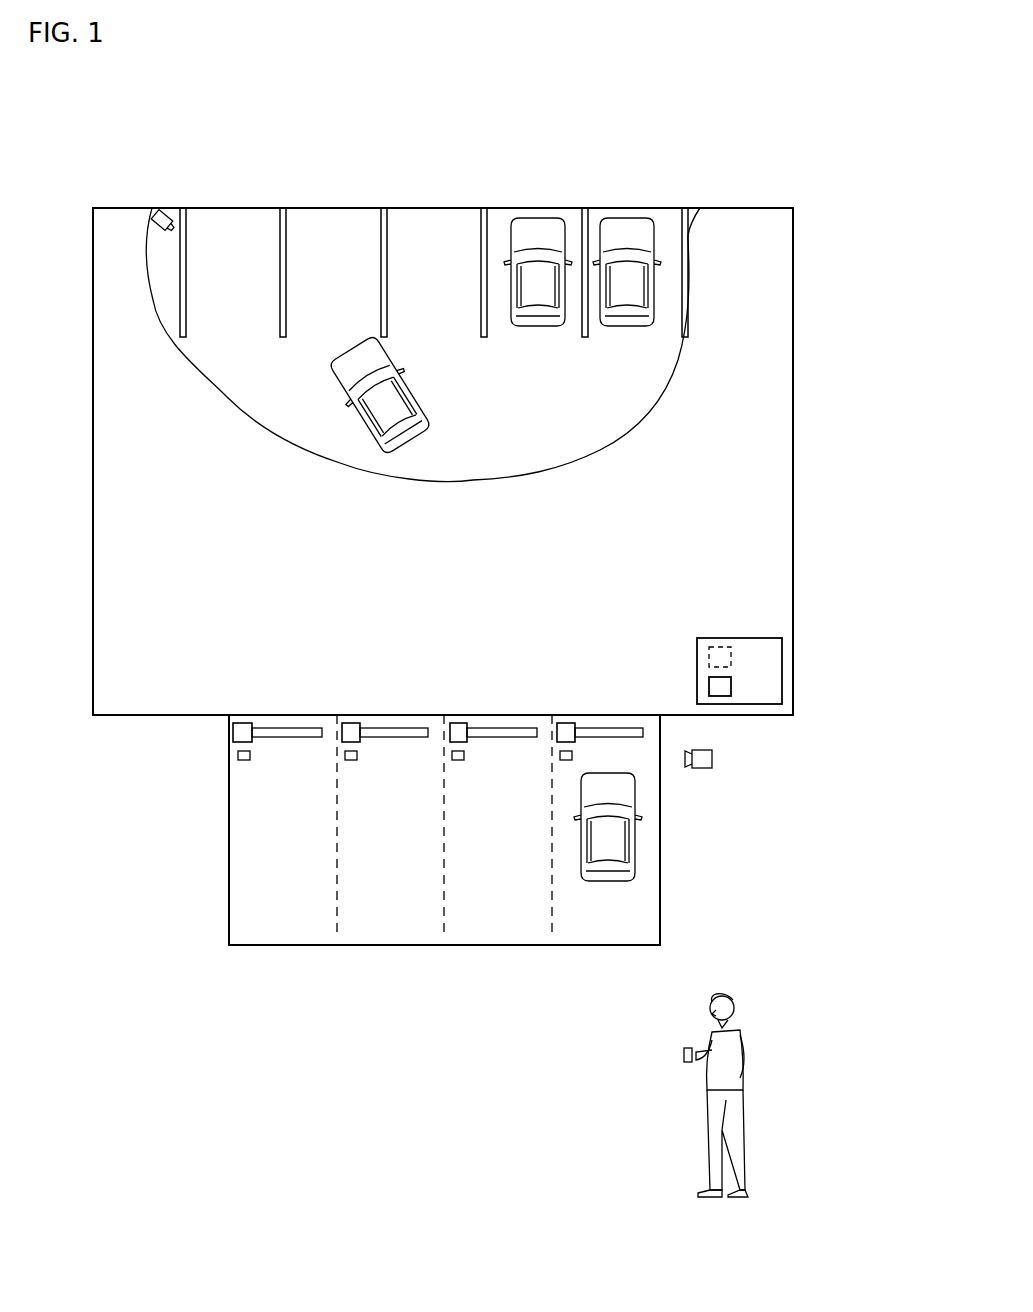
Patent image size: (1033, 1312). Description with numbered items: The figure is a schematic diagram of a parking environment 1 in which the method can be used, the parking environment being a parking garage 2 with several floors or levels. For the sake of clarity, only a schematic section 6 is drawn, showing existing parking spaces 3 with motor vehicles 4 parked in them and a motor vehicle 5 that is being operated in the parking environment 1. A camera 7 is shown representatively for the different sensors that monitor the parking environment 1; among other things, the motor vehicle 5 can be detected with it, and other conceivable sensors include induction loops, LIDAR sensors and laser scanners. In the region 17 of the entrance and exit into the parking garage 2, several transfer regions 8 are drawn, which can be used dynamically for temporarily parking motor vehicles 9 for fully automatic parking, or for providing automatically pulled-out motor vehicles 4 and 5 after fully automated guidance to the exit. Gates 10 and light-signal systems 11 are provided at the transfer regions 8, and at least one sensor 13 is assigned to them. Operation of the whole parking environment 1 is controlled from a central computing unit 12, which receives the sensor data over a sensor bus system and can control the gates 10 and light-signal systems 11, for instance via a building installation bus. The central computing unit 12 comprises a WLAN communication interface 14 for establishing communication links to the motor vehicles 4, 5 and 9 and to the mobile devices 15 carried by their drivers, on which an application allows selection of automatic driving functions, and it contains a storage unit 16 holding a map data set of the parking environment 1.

The parking environment 1 is at (684, 130).
The parking garage 2 is at (92, 312).
The parking spaces 3 is at (235, 218).
The motor vehicles 4 is at (540, 218).
The motor vehicle 5 is at (413, 397).
The schematic section 6 is at (700, 237).
The camera 7 is at (168, 207).
The transfer regions 8 is at (270, 933).
The motor vehicles 9 is at (633, 863).
The gates 10 is at (233, 733).
The light-signal systems 11 is at (242, 762).
The central computing unit 12 is at (782, 663).
The sensor 13 is at (716, 758).
The WLAN communication interface 14 is at (731, 685).
The mobile devices 15 is at (683, 1058).
The storage unit 16 is at (722, 645).
The region of an entrance and exit 17 is at (493, 698).